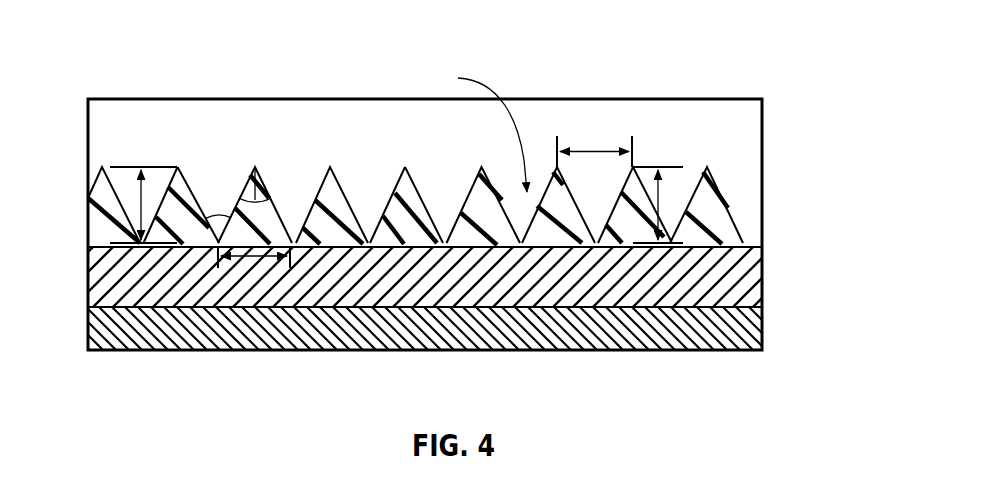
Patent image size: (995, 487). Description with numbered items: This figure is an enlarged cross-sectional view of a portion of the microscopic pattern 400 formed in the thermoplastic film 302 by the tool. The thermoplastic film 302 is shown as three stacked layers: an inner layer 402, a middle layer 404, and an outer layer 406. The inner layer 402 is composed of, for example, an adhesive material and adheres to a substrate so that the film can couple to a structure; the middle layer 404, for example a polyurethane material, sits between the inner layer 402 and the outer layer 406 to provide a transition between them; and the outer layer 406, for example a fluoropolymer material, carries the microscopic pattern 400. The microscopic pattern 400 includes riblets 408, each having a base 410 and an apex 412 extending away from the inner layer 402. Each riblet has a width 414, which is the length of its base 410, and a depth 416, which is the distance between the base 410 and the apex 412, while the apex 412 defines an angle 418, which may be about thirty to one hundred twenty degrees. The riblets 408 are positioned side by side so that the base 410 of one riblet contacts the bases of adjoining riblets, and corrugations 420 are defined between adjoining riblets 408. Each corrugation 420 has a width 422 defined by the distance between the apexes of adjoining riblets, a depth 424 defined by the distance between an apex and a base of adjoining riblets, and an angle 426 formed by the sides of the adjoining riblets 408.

The thermoplastic film 302 is at (772, 382).
The microscopic pattern 400 is at (790, 197).
The inner layer 402 is at (560, 340).
The middle layer 404 is at (745, 287).
The outer layer 406 is at (732, 216).
The riblets 408 is at (195, 205).
The base 410 is at (397, 185).
The apex 412 is at (400, 198).
The width 414 is at (247, 257).
The depth 416 is at (140, 184).
The angle 418 is at (224, 211).
The corrugations 420 is at (470, 128).
The width 422 is at (600, 151).
The depth 424 is at (658, 198).
The angle 426 is at (255, 168).